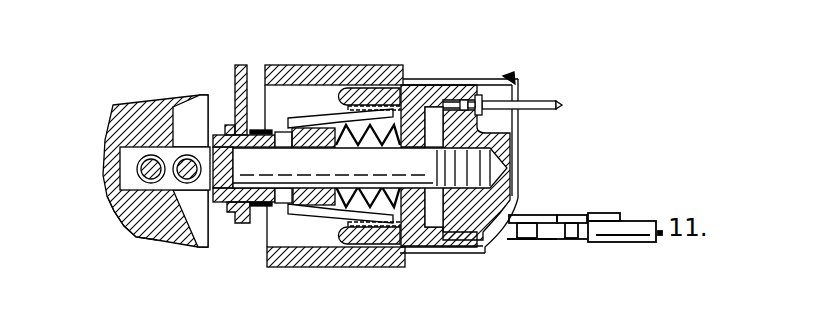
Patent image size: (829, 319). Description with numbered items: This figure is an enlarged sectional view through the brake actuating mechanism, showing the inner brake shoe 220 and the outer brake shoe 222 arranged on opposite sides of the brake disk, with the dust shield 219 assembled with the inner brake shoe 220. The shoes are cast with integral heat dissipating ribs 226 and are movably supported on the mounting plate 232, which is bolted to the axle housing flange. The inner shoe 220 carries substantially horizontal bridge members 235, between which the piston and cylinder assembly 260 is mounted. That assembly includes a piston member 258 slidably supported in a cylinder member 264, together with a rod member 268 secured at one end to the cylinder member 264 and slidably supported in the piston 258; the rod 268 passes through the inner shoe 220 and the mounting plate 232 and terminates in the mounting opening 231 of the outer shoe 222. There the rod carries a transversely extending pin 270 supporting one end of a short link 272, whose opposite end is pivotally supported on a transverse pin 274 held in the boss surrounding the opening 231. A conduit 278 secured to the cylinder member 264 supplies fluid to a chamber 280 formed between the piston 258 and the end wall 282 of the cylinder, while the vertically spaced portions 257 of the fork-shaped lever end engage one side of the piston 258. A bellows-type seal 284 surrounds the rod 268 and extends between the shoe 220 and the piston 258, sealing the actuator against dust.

The dust shield 219 is at (520, 145).
The inner brake shoe 220 is at (300, 128).
The outer brake shoe 222 is at (173, 240).
The heat dissipating ribs 226 is at (341, 96).
The mounting opening 231 is at (127, 177).
The mounting plate 232 is at (247, 222).
The bridge members 235 is at (342, 88).
The vertically spaced portions 257 is at (367, 118).
The piston member 258 is at (408, 120).
The piston and cylinder assembly 260 is at (512, 77).
The cylinder member 264 is at (452, 245).
The rod member 268 is at (370, 168).
The transversely extending pin 270 is at (206, 145).
The short link 272 is at (128, 212).
The transverse pin 274 is at (148, 160).
The conduit 278 is at (528, 104).
The chamber 280 is at (433, 107).
The end wall 282 is at (517, 202).
The bellows-type seal 284 is at (403, 248).